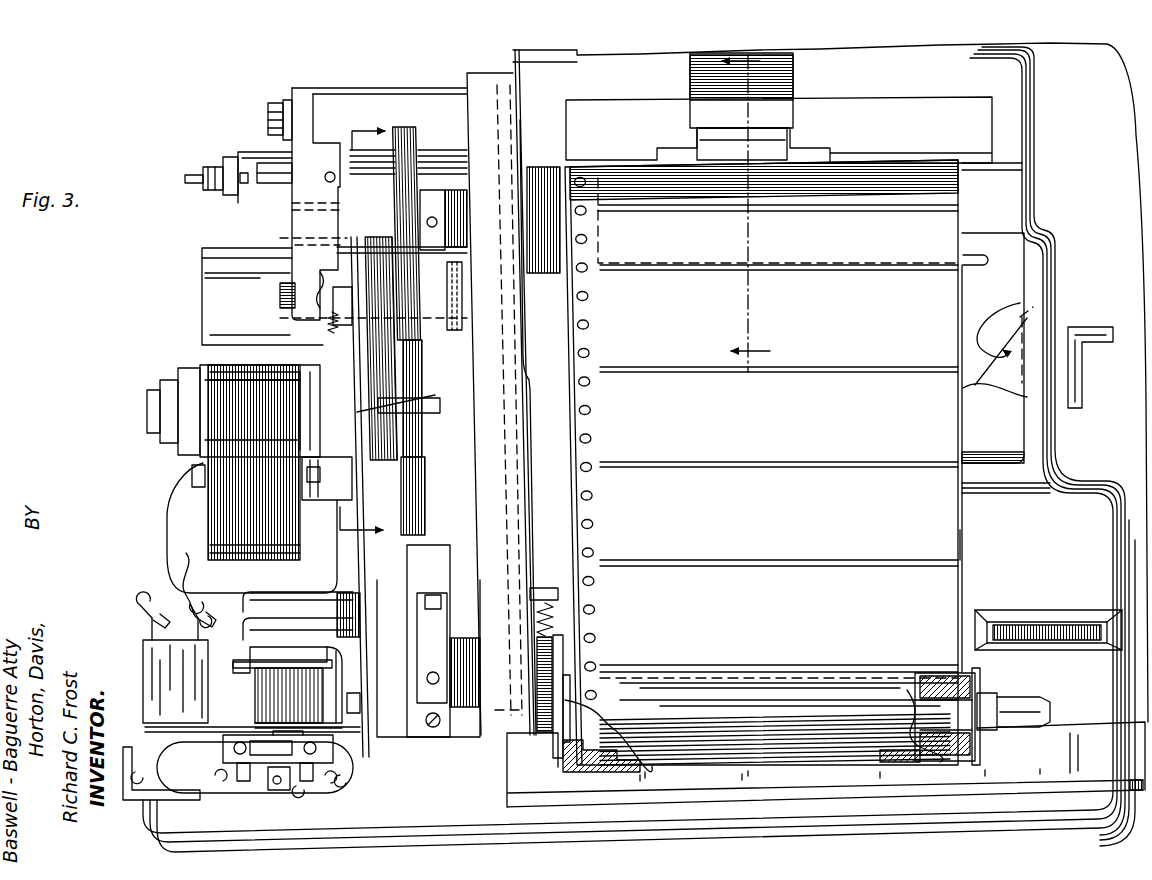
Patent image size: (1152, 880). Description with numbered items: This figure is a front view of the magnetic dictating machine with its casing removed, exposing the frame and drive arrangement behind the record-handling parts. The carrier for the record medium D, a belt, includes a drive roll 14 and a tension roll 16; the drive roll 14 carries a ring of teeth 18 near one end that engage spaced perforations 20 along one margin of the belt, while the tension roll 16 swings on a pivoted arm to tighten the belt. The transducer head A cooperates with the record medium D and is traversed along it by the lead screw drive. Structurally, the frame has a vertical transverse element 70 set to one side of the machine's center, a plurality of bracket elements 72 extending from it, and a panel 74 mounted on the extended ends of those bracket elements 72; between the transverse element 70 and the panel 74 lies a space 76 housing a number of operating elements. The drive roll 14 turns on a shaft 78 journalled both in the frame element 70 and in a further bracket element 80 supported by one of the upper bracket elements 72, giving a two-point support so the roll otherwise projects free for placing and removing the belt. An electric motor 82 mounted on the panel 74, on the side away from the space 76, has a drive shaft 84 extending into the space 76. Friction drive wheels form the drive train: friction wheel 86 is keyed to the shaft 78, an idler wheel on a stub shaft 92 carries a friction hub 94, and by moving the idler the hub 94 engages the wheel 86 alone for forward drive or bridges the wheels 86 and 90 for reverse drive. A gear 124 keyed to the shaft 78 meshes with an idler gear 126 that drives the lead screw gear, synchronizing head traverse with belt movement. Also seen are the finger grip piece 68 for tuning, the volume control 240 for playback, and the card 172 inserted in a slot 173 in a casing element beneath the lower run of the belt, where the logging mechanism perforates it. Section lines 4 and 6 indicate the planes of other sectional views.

The section line 4- 4 is at (756, 212).
The section line 6- 6 is at (359, 332).
The drive roll 14 is at (876, 268).
The tension roll 16 is at (781, 675).
The teeth 18 is at (590, 208).
The perforations 20 is at (594, 490).
The finger grip piece 68 is at (1100, 328).
The vertical transverse frame element 70 is at (516, 448).
The bracket elements 72 is at (352, 95).
The panel 74 is at (360, 496).
The space 76 is at (455, 486).
The shaft 78 is at (372, 220).
The bracket element 80 is at (292, 88).
The motor 82 is at (178, 508).
The drive shaft 84 is at (430, 426).
The friction wheel 86 is at (420, 153).
The friction wheel 90 is at (426, 505).
The stub shaft 92 is at (440, 328).
The friction hub 94 is at (421, 352).
The gear 124 is at (458, 229).
The idler gear 126 is at (456, 300).
The card 172 is at (1056, 291).
The slot 173 is at (975, 383).
The volume control 240 is at (1060, 627).
The transducer head A is at (800, 135).
The record medium D is at (967, 545).